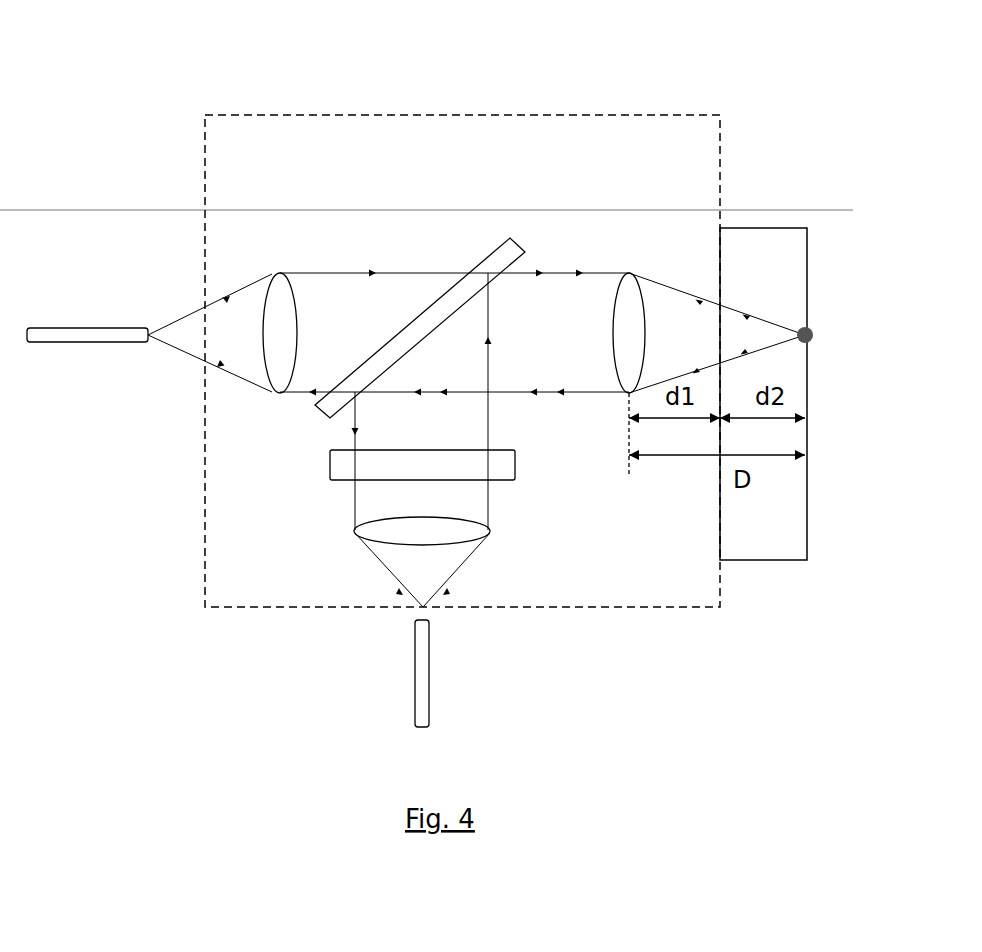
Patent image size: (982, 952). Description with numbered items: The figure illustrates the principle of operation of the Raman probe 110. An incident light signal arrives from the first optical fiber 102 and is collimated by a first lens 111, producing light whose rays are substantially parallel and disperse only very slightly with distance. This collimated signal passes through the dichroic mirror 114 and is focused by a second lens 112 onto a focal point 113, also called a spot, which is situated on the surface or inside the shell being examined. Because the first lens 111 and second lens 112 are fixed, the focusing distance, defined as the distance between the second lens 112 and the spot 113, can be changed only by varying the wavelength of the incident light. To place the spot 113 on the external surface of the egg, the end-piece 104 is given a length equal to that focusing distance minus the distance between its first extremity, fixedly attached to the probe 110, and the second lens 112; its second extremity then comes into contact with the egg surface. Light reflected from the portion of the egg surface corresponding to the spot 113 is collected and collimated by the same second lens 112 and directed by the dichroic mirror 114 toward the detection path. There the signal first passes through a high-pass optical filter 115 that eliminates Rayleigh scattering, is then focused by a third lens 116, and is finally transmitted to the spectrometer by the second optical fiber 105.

The Raman probe 110 is at (538, 113).
The end-piece 104 is at (763, 225).
The first optical fiber 102 is at (72, 328).
The first lens 111 is at (278, 290).
The dichroic mirror 114 is at (497, 245).
The second lens 112 is at (623, 305).
The focal point 113 is at (807, 328).
The high-pass optical filter 115 is at (500, 468).
The third lens 116 is at (450, 528).
The second optical fiber 105 is at (423, 680).